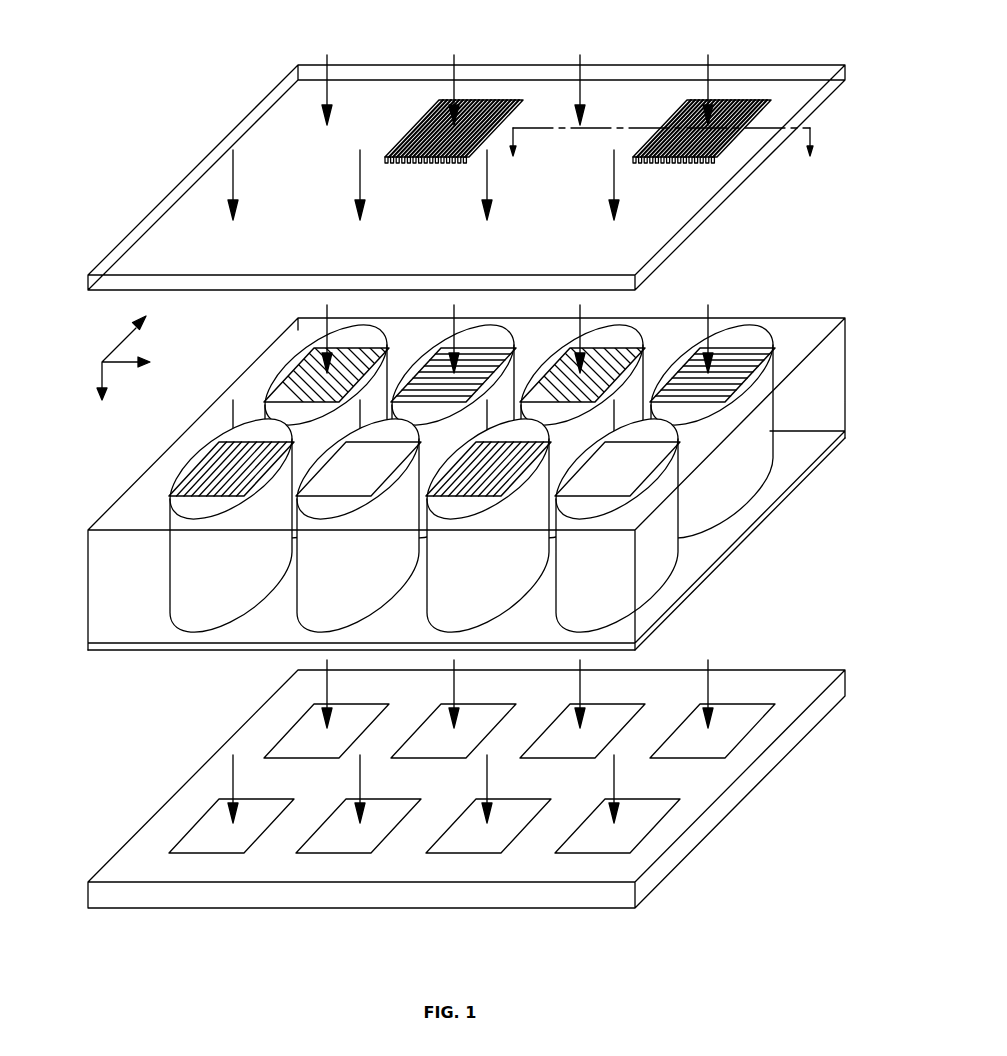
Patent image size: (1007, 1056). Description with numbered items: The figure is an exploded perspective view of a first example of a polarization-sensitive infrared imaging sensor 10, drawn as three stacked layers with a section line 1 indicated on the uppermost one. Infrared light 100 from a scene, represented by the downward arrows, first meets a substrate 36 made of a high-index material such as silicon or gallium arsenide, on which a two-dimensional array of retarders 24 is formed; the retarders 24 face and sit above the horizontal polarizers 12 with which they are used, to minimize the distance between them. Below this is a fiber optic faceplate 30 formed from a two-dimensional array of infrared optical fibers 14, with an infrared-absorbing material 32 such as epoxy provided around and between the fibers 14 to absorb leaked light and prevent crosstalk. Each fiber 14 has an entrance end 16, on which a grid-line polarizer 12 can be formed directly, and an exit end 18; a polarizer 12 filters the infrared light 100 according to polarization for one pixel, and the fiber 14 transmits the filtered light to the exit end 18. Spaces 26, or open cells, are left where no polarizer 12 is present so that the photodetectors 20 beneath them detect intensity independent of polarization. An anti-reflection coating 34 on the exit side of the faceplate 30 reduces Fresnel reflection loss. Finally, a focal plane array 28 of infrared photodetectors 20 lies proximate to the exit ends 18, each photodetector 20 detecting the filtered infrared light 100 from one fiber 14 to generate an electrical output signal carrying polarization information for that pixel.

The polarization-sensitive infrared imaging sensor 10 is at (466, 501).
The polarizer 12 is at (220, 444).
The optical fiber 14 is at (428, 342).
The entrance end 16 is at (737, 340).
The exit end 18 is at (728, 523).
The infrared photodetector 20 is at (307, 843).
The retarder 24 is at (432, 113).
The space 26 is at (313, 478).
The focal plane array 28 is at (187, 783).
The fiber optic faceplate 30 is at (137, 478).
The infrared-absorbing material 32 is at (292, 585).
The anti-reflection coating 34 is at (113, 652).
The substrate 36 is at (140, 223).
The infrared light 100 is at (708, 57).
The section line 1 is at (661, 155).